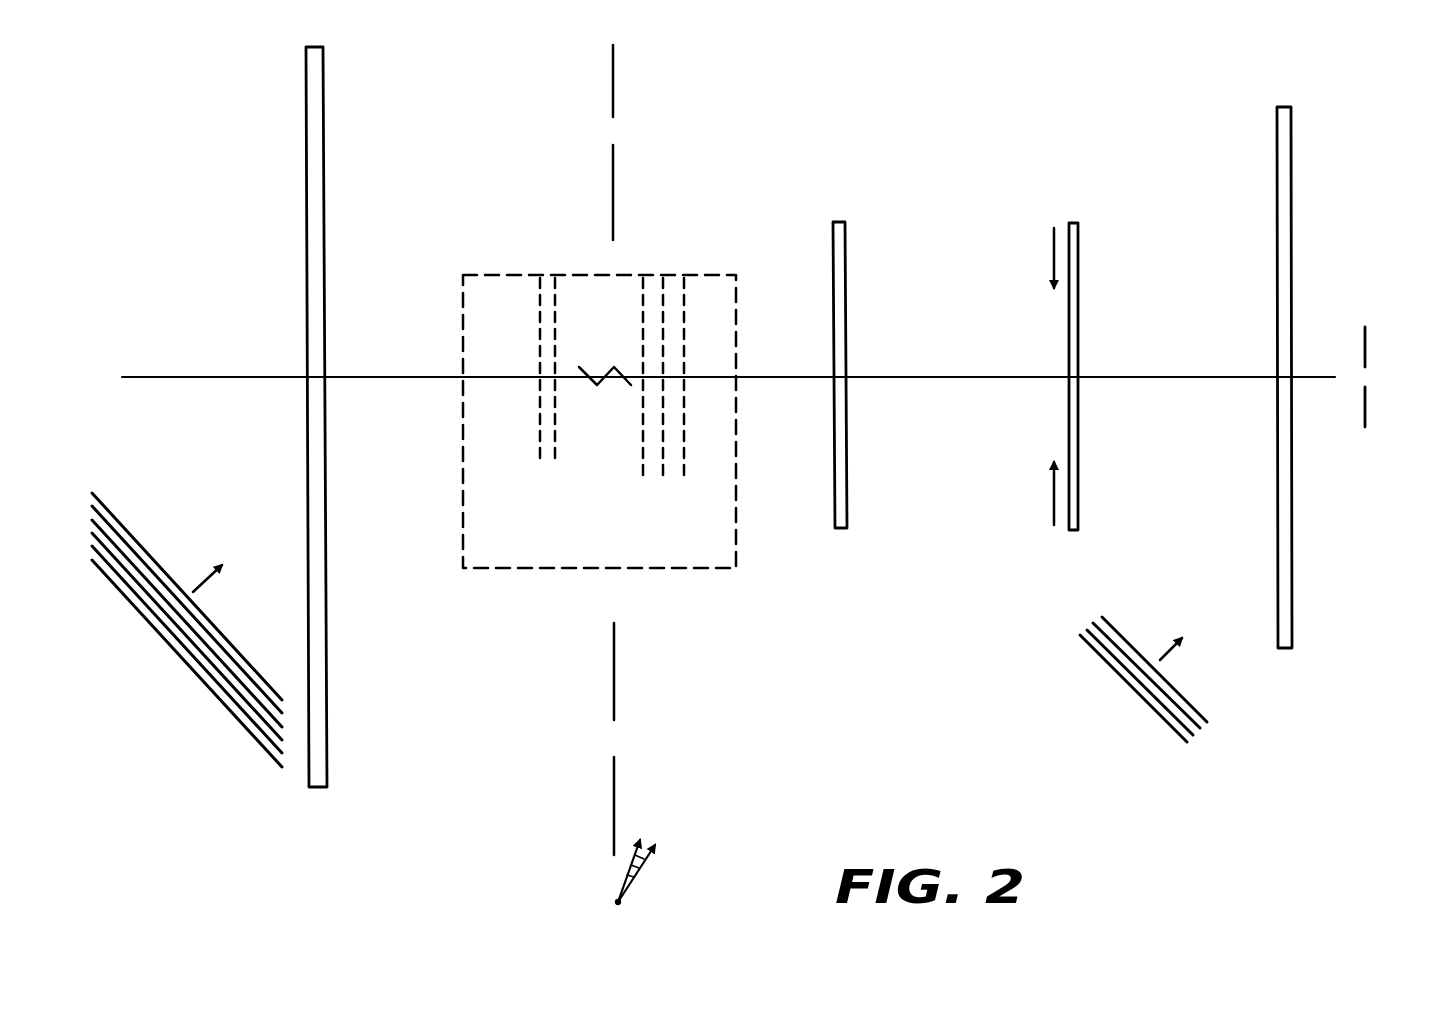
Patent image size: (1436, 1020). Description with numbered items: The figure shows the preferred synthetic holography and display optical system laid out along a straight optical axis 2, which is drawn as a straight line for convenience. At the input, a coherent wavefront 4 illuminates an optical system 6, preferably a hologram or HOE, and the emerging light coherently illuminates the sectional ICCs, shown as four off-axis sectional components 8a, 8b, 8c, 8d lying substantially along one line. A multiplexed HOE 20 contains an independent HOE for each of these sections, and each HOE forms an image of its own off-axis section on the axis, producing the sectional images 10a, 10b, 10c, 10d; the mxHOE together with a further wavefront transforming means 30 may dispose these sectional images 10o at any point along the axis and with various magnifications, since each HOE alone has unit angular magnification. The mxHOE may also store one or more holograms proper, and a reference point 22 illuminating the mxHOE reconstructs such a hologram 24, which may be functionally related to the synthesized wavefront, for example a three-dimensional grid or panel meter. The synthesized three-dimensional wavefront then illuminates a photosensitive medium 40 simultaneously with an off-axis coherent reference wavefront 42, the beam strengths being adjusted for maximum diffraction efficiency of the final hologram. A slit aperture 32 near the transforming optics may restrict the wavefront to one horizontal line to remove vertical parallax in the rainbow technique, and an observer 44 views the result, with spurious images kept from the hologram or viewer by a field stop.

The optical axis 2 is at (1233, 378).
The coherent wavefront 4 is at (138, 541).
The optical system 6 is at (324, 90).
The off-axis sectional component 8a is at (613, 88).
The off-axis sectional component 8b is at (613, 190).
The off-axis sectional component 8c is at (614, 690).
The off-axis sectional component 8d is at (614, 800).
The sectional image 10a is at (684, 480).
The sectional image 10b is at (643, 480).
The sectional image 10c is at (555, 462).
The sectional image 10d is at (540, 462).
The sectional images 10o is at (612, 375).
The multiplexed HOE 20 is at (840, 222).
The reference point 22 is at (625, 900).
The hologram 24 is at (695, 275).
The wavefront transforming means 30 is at (1073, 223).
The slit aperture 32 is at (1052, 242).
The photosensitive medium 40 is at (1284, 107).
The off-axis coherent reference wavefront 42 is at (1150, 712).
The observer 44 is at (1372, 355).